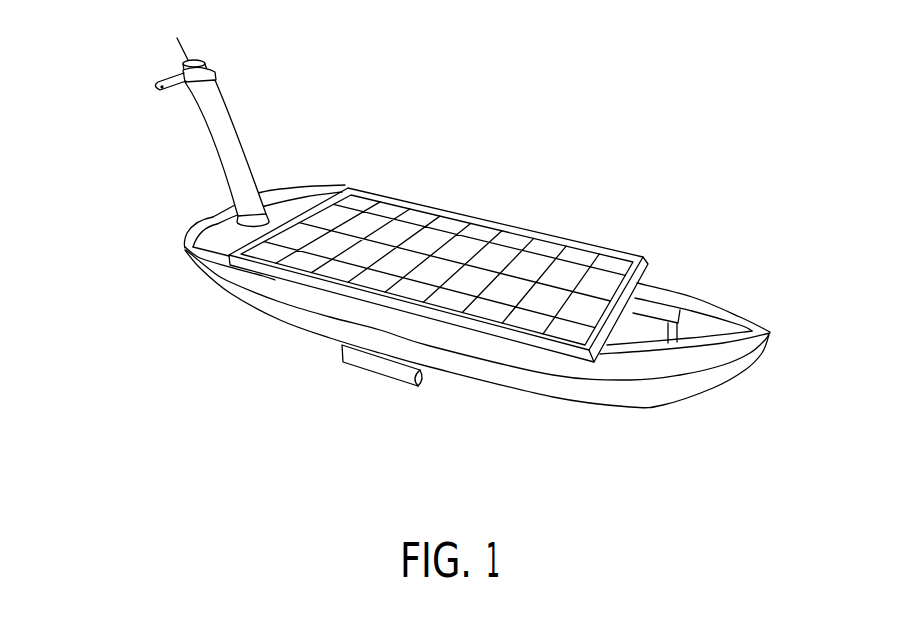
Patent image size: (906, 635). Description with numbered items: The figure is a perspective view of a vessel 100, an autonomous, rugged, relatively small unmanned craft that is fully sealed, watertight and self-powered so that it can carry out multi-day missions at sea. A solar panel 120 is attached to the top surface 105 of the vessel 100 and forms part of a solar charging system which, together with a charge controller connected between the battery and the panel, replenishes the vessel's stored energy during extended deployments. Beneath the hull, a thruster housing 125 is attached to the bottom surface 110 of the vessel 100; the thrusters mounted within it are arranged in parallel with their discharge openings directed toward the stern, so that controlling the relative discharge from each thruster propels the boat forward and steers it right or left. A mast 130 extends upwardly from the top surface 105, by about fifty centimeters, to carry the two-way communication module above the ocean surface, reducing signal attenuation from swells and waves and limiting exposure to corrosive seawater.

The vessel 100 is at (129, 51).
The top surface 105 is at (692, 297).
The bottom surface 110 is at (536, 400).
The solar panel 120 is at (500, 252).
The thruster housing 125 is at (387, 371).
The mast 130 is at (222, 150).